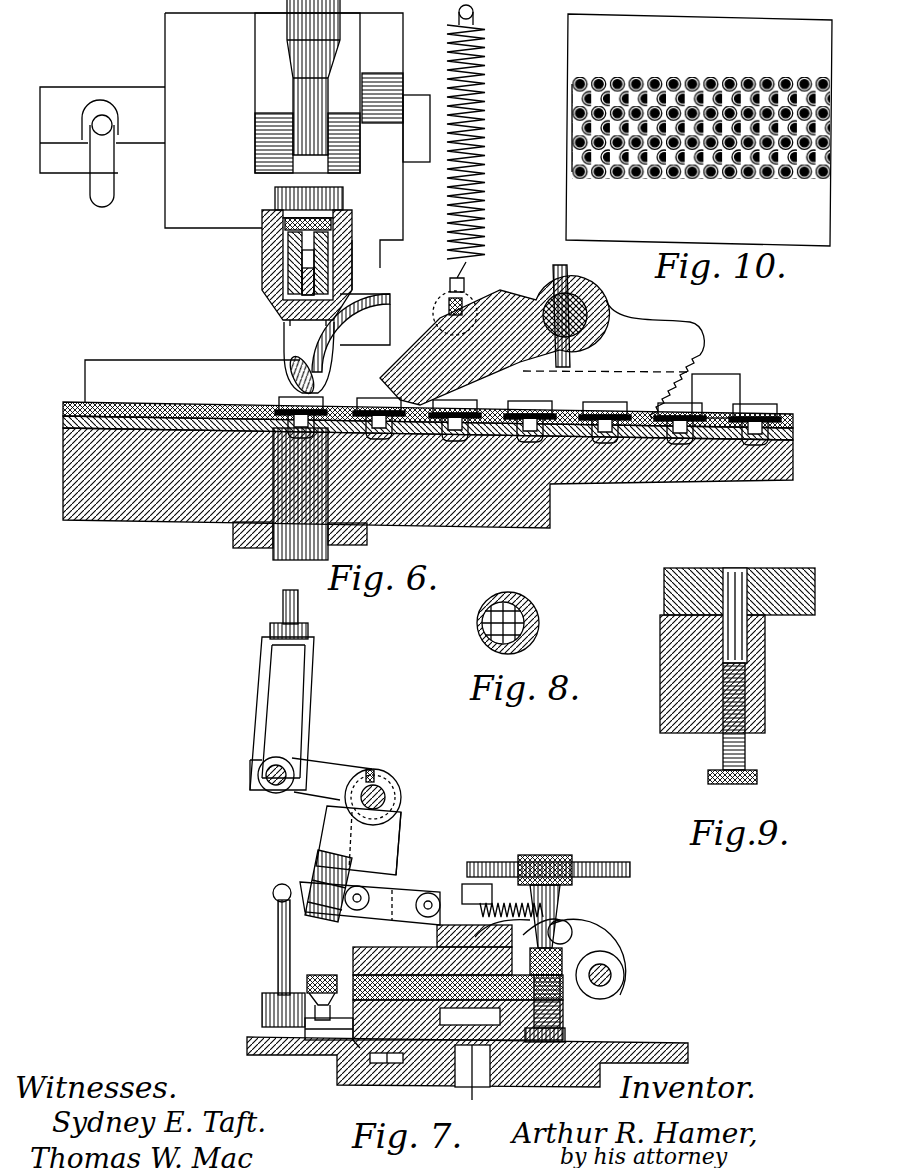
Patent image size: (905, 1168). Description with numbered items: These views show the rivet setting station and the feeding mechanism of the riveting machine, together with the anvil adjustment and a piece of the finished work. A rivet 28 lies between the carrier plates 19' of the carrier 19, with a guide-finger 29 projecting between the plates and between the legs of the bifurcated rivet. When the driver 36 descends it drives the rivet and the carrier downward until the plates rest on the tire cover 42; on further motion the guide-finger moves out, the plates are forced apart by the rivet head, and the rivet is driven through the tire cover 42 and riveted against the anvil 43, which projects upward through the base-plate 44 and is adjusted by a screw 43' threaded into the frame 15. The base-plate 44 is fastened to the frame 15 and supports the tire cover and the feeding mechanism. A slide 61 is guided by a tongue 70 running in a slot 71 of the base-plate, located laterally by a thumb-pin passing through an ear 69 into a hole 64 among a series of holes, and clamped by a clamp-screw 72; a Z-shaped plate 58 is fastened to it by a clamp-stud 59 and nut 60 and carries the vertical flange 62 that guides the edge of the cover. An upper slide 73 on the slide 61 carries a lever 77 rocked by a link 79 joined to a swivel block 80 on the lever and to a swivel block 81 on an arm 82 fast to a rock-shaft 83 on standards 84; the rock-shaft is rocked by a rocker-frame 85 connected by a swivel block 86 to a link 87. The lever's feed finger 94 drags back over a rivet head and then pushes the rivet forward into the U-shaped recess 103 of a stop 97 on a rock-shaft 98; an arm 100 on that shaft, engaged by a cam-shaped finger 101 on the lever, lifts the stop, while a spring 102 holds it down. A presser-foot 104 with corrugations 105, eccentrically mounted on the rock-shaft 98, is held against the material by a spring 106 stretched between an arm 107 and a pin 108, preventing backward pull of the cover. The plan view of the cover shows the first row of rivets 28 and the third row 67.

In FIG. 6, the driver 36 is at (290, 38).
In FIG. 6, the carrier plate 19' is at (282, 265).
In FIG. 6, the carrier 19 is at (272, 268).
In FIG. 6, the rivet 28 is at (333, 226).
In FIG. 10, the rivet 28 is at (690, 85).
In FIG. 6, the guide-finger 29 is at (296, 300).
In FIG. 6, the feed finger 94 is at (285, 345).
In FIG. 6, the tire cover 42 is at (231, 402).
In FIG. 10, the tire cover 42 is at (580, 46).
In FIG. 6, the base-plate 44 is at (556, 503).
In FIG. 9, the base-plate 44 is at (680, 575).
In FIG. 7, the base-plate 44 is at (662, 1046).
In FIG. 6, the anvil 43 is at (282, 510).
In FIG. 9, the anvil 43 is at (770, 615).
In FIG. 9, the screw 43' is at (762, 723).
In FIG. 6, the frame 15 is at (233, 538).
In FIG. 9, the frame 15 is at (668, 720).
In FIG. 6, the U-shaped recess 103 is at (383, 398).
In FIG. 8, the U-shaped recess 103 is at (497, 606).
In FIG. 6, the vertical flange 62 is at (730, 396).
In FIG. 6, the stop 97 is at (494, 290).
In FIG. 8, the stop 97 is at (538, 630).
In FIG. 6, the rock-shaft 98 is at (584, 308).
In FIG. 7, the rock-shaft 98 is at (613, 980).
In FIG. 6, the arm 107 is at (468, 293).
In FIG. 6, the spring 106 is at (487, 138).
In FIG. 6, the pin 108 is at (476, 12).
In FIG. 6, the presser-foot 104 is at (698, 320).
In FIG. 6, the corrugations 105 is at (702, 360).
In FIG. 10, the third row of rivets 67 is at (572, 136).
In FIG. 7, the link 87 is at (310, 692).
In FIG. 7, the swivel block 86 is at (283, 770).
In FIG. 7, the rocker-frame 85 is at (326, 773).
In FIG. 7, the rock-shaft 83 is at (387, 800).
In FIG. 7, the arm 82 is at (345, 840).
In FIG. 7, the standards 84 is at (400, 860).
In FIG. 7, the swivel block 81 is at (322, 880).
In FIG. 7, the link 79 is at (390, 900).
In FIG. 7, the swivel block 80 is at (437, 892).
In FIG. 7, the lever 77 is at (440, 936).
In FIG. 7, the upper slide 73 is at (355, 963).
In FIG. 7, the clamp-screw 72 is at (268, 1002).
In FIG. 7, the ear 69 is at (302, 1033).
In FIG. 7, the hole 64 is at (322, 1056).
In FIG. 7, the slide 61 is at (357, 1042).
In FIG. 7, the tongue 70 is at (382, 1063).
In FIG. 7, the slot 71 is at (400, 1065).
In FIG. 7, the Z-shaped plate 58 is at (471, 1086).
In FIG. 7, the clamp-stud 59 is at (560, 1036).
In FIG. 7, the nut 60 is at (562, 894).
In FIG. 7, the spring 102 is at (505, 912).
In FIG. 7, the cam-shaped finger 101 is at (570, 926).
In FIG. 7, the arm 100 is at (610, 955).